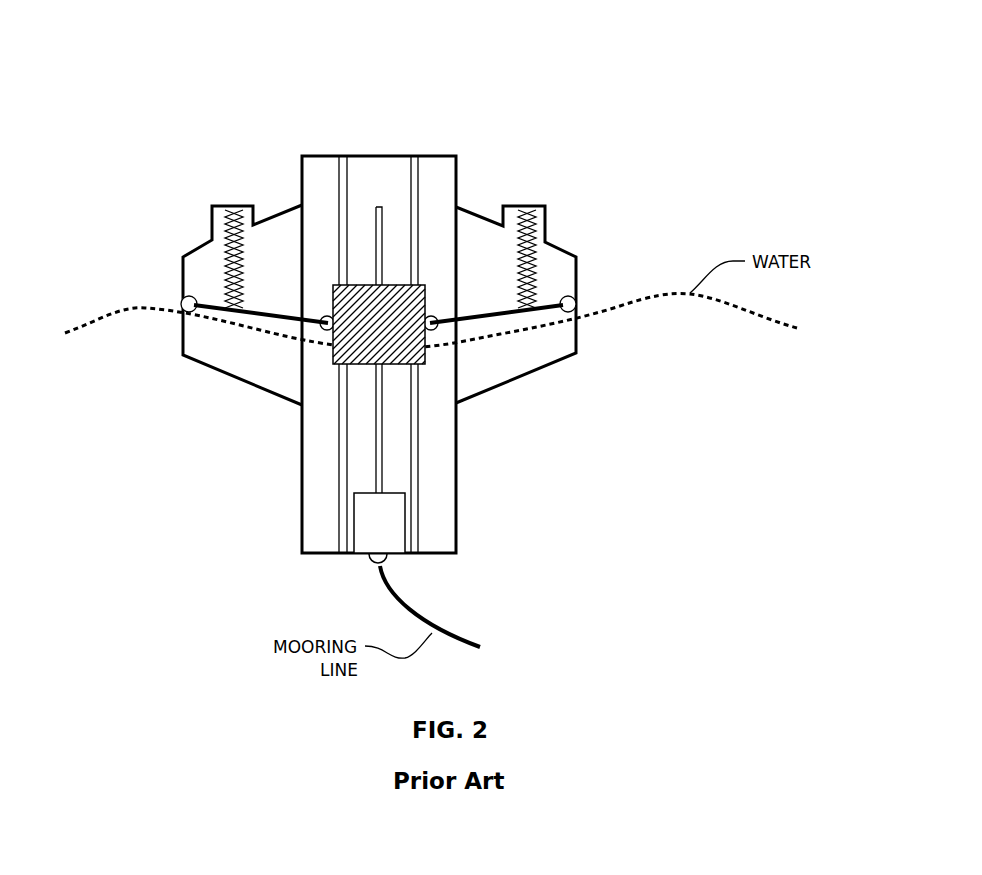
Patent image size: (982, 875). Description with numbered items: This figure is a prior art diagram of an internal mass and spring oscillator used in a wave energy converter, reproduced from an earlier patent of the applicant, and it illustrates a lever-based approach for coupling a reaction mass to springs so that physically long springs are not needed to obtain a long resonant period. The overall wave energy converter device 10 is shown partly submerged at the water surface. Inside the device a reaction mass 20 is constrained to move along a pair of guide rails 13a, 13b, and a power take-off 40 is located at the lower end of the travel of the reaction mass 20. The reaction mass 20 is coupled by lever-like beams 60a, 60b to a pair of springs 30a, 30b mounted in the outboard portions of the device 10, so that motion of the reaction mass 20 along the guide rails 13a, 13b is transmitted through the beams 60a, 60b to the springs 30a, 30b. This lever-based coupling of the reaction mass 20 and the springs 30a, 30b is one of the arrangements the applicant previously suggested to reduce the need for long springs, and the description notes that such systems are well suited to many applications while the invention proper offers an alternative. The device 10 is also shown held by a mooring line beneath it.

The wave energy converter 10 is at (387, 156).
The guide rail 13a is at (340, 417).
The guide rail 13b is at (415, 475).
The reaction mass 20 is at (407, 337).
The spring 30a is at (225, 267).
The spring 30b is at (527, 270).
The power take-off 40 is at (376, 526).
The beam 60a is at (273, 317).
The beam 60b is at (473, 318).